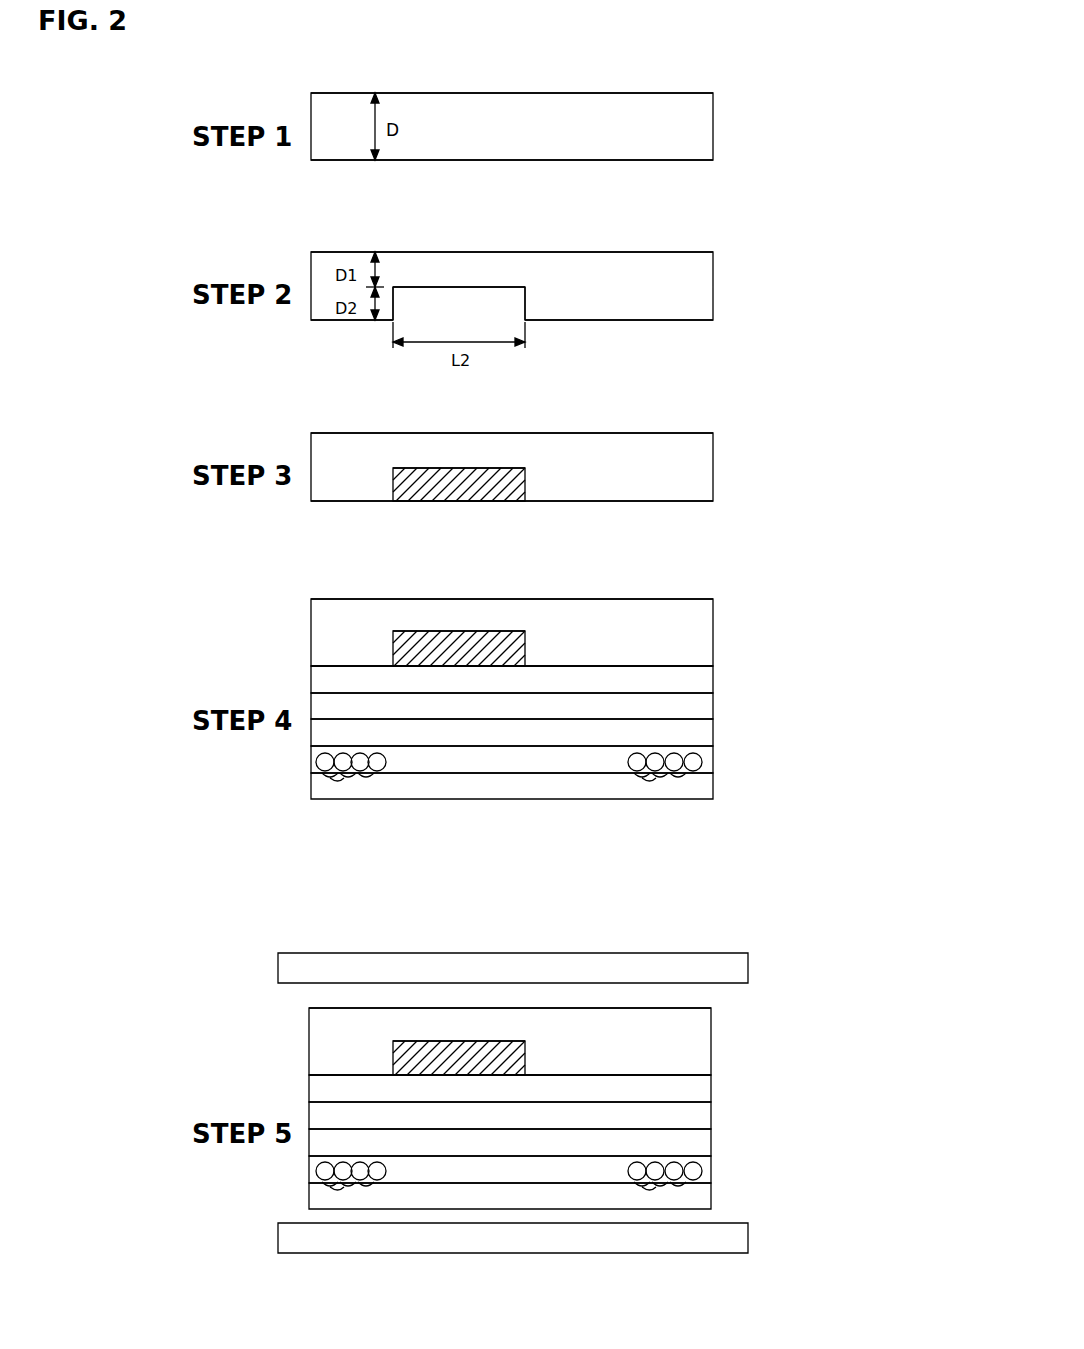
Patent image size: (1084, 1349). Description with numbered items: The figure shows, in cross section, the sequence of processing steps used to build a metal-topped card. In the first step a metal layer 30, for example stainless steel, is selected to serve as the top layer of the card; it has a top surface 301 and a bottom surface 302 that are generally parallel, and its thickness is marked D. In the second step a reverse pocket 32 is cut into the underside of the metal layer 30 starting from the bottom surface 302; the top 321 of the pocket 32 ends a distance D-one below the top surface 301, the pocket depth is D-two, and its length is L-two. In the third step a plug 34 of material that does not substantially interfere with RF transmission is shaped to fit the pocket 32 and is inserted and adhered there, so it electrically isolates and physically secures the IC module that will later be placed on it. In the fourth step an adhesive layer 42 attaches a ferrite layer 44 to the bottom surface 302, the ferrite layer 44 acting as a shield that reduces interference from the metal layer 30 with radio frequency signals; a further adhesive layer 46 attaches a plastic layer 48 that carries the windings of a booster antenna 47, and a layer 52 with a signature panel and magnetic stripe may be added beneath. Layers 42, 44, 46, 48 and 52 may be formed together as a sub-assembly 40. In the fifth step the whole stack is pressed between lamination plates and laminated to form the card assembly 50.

The metal layer 30 is at (713, 126).
The top surface 301 is at (686, 93).
The bottom surface 302 is at (686, 160).
The pocket 32 is at (517, 301).
The top of pocket 321 is at (498, 286).
The plug 34 is at (525, 481).
The sub-assembly 40 is at (785, 664).
The adhesive layer 42 is at (713, 671).
The ferrite layer 44 is at (713, 697).
The adhesive layer 46 is at (713, 724).
The booster antenna 47 is at (355, 778).
The plastic layer 48 is at (713, 751).
The signature panel and magnetic stripe layer 52 is at (713, 777).
The card assembly 50 is at (882, 980).